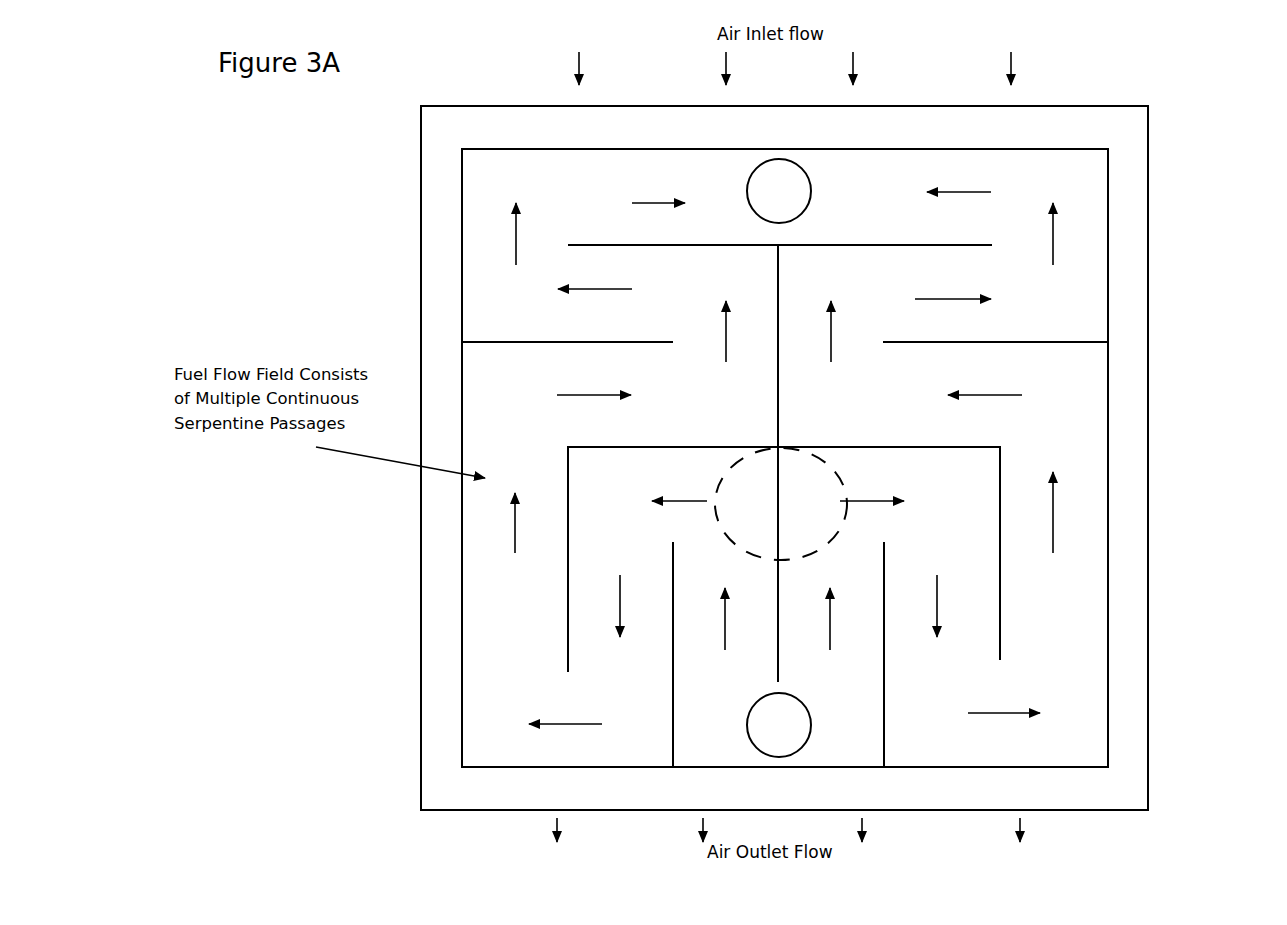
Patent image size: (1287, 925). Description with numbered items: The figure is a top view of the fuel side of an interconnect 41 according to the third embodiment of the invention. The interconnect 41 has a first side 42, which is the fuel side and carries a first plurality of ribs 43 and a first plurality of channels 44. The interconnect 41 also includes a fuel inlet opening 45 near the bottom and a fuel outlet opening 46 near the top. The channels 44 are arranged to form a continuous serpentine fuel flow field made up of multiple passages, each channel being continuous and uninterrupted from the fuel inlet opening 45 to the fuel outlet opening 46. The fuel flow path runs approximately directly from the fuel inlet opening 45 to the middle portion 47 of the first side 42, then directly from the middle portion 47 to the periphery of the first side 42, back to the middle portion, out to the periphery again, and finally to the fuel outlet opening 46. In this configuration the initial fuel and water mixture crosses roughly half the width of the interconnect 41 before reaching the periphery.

The interconnect 41 is at (1258, 270).
The first side 42 is at (1155, 602).
The first plurality of ribs 43 is at (1007, 460).
The first plurality of channels 44 is at (1076, 565).
The fuel inlet opening 45 is at (806, 741).
The fuel outlet opening 46 is at (791, 168).
The middle portion 47 is at (847, 524).